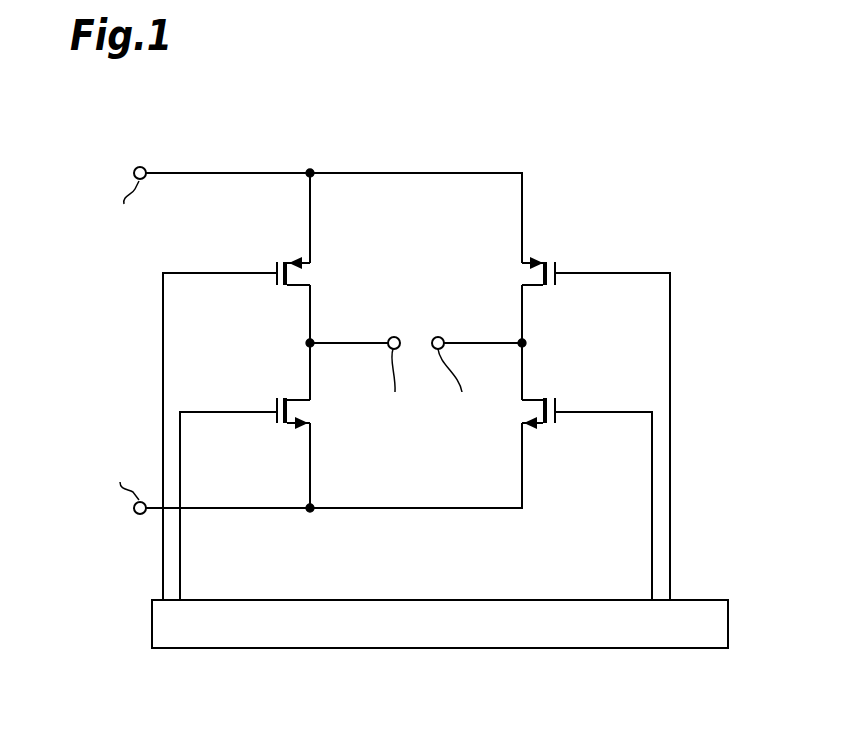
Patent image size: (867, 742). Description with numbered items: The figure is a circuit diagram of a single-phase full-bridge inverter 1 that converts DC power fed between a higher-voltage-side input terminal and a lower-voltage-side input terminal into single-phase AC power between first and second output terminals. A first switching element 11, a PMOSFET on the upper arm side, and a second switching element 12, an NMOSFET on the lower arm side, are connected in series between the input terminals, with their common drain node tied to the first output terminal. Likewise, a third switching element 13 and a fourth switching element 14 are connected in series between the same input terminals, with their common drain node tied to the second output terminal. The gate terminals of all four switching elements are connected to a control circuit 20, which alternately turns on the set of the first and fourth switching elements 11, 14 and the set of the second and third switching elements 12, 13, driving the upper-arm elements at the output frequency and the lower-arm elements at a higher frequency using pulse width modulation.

The inverter 1 is at (709, 193).
The first switching element 11 is at (272, 283).
The second switching element 12 is at (273, 408).
The third switching element 13 is at (558, 283).
The fourth switching element 14 is at (555, 405).
The control circuit 20 is at (502, 599).